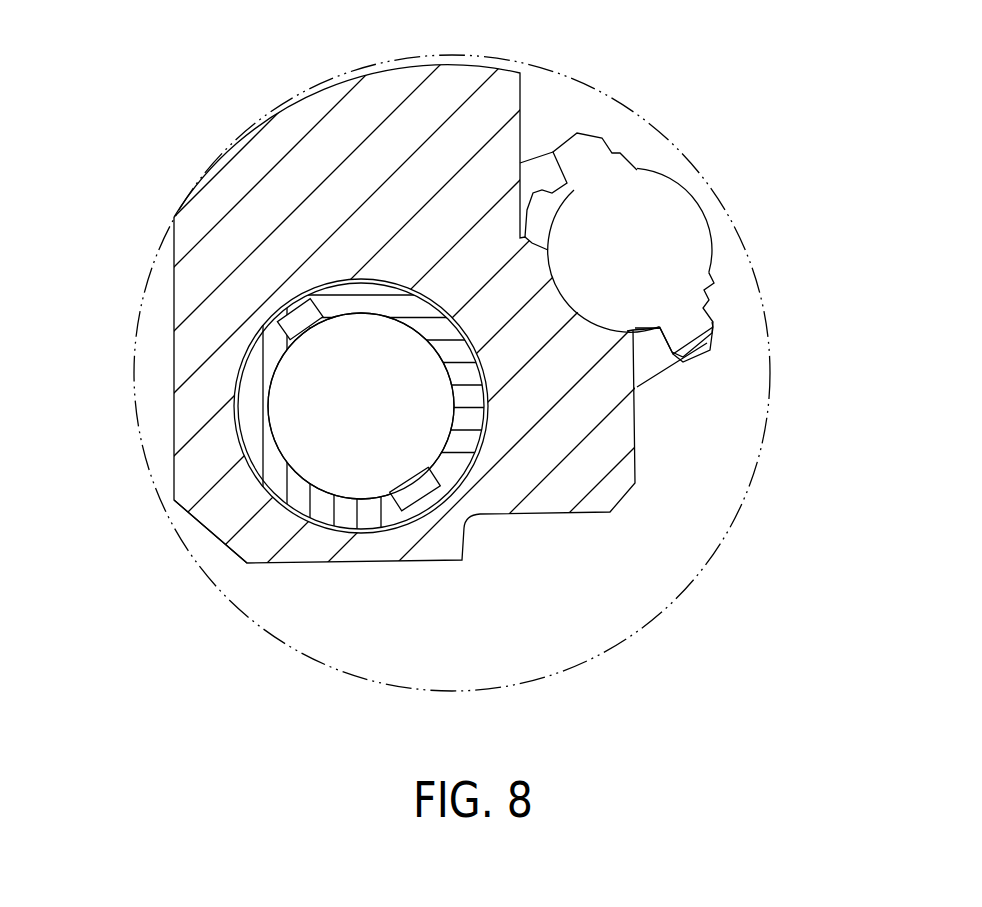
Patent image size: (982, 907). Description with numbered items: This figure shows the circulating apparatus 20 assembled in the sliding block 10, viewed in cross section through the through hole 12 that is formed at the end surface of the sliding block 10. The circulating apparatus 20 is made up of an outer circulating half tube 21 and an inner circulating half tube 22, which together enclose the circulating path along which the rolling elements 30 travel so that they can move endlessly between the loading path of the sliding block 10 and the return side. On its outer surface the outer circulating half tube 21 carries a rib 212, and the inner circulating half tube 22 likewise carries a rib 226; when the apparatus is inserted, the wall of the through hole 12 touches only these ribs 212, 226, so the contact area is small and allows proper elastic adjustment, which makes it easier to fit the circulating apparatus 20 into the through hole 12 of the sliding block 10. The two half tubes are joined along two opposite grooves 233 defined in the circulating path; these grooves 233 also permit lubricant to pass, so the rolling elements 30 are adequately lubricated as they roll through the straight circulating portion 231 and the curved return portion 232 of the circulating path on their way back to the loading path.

The sliding block 10 is at (376, 97).
The through hole 12 is at (233, 347).
The circulating apparatus 20 is at (681, 201).
The outer circulating half tube 21 is at (320, 508).
The inner circulating half tube 22 is at (450, 341).
The rolling elements 30 is at (410, 435).
The rib 212 is at (185, 517).
The rib 226 is at (470, 341).
The straight circulating portion 231 is at (268, 416).
The curved return portion 232 is at (660, 218).
The grooves 233 is at (305, 315).